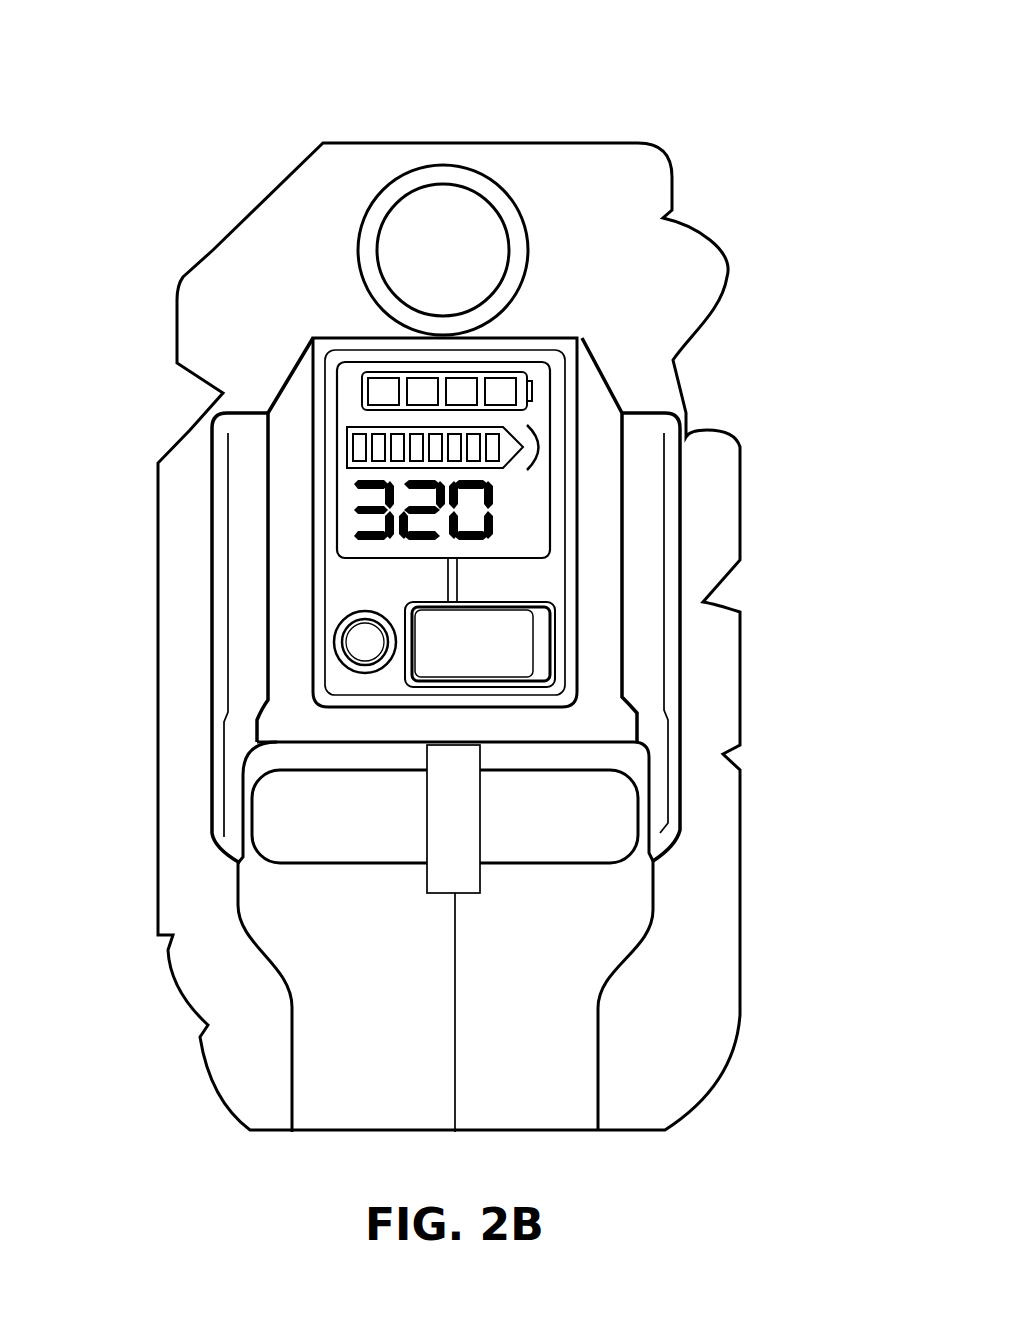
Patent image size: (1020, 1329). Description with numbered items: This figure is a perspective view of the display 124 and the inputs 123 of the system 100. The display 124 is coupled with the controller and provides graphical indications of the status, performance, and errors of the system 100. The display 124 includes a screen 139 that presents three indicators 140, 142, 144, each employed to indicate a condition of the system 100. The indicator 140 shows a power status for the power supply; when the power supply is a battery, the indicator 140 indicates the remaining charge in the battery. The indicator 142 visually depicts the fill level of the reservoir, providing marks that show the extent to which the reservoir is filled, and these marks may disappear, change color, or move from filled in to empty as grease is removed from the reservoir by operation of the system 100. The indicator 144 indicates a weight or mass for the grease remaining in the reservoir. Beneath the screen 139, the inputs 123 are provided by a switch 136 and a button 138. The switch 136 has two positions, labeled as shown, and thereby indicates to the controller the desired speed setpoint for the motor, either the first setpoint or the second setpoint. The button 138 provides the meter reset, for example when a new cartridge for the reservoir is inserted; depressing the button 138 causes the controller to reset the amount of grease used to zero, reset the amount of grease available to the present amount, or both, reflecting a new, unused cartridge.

The system 100 is at (670, 48).
The inputs 123 is at (480, 727).
The display 124 is at (563, 415).
The switch 136 is at (503, 662).
The button 138 is at (340, 640).
The screen 139 is at (535, 532).
The indicator 140 is at (380, 378).
The indicator 142 is at (372, 447).
The indicator 144 is at (352, 507).